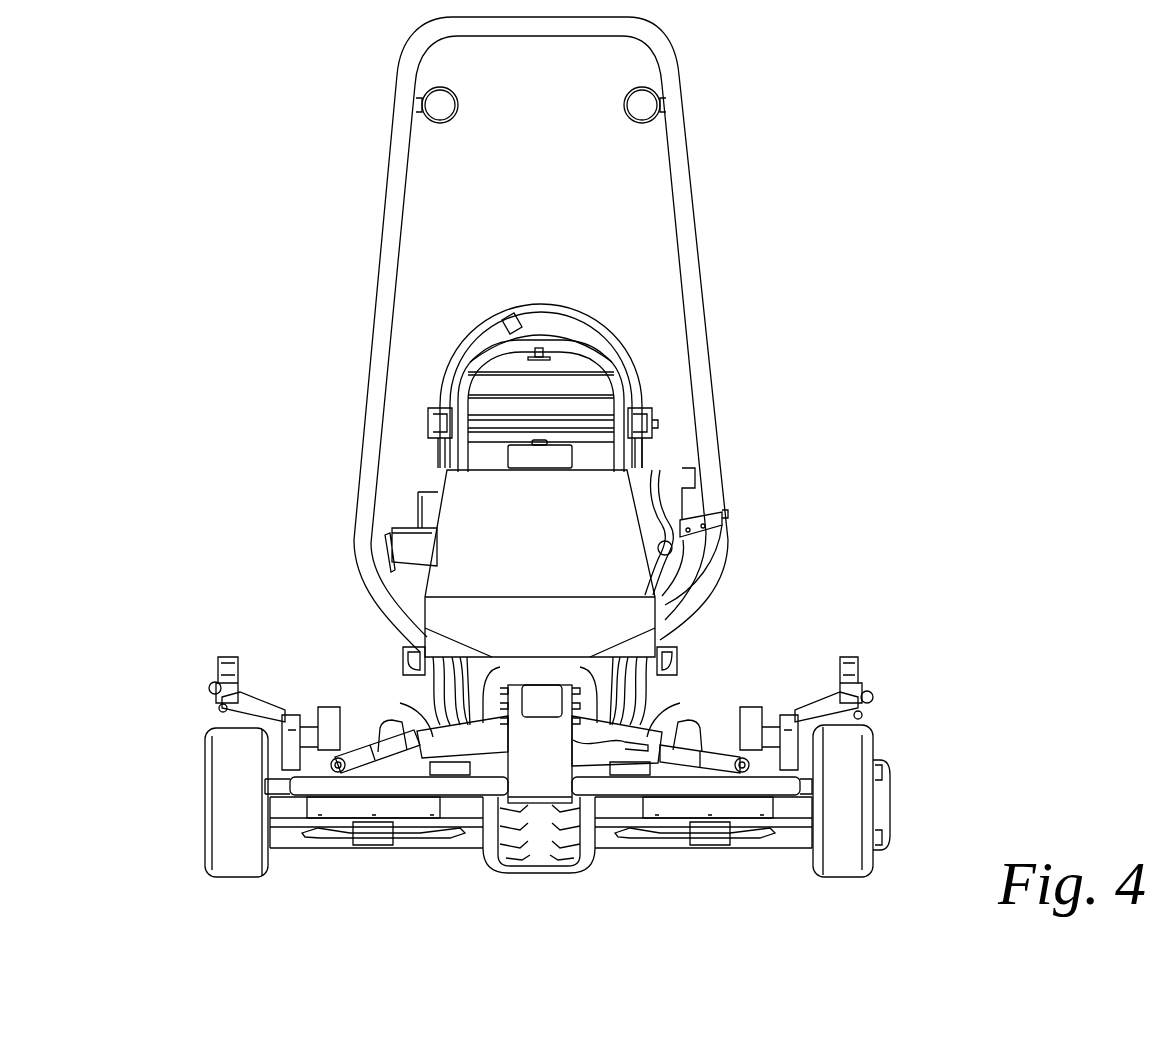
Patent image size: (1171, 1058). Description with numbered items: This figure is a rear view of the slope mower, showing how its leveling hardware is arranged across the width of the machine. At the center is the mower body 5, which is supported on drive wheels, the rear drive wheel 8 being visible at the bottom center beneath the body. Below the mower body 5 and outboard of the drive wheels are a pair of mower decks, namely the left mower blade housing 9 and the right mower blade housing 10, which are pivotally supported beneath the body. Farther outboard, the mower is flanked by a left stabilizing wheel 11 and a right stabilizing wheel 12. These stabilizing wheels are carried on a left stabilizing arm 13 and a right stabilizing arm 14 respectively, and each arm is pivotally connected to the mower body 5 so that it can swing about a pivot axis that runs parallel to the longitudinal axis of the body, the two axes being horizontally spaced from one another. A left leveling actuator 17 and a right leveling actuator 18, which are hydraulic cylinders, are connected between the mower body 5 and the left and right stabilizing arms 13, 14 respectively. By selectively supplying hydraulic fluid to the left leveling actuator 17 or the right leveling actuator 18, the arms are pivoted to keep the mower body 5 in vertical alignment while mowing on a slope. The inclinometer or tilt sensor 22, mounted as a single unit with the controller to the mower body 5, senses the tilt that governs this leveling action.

The mower body 5 is at (455, 478).
The rear drive wheel 8 is at (540, 873).
The left mower blade housing 9 is at (340, 850).
The right mower blade housing 10 is at (708, 850).
The left stabilizing wheel 11 is at (225, 858).
The right stabilizing wheel 12 is at (845, 757).
The left stabilizing arm 13 is at (398, 790).
The right stabilizing arm 14 is at (733, 787).
The left leveling actuator 17 is at (432, 735).
The right leveling actuator 18 is at (660, 724).
The tilt sensor 22 is at (537, 693).